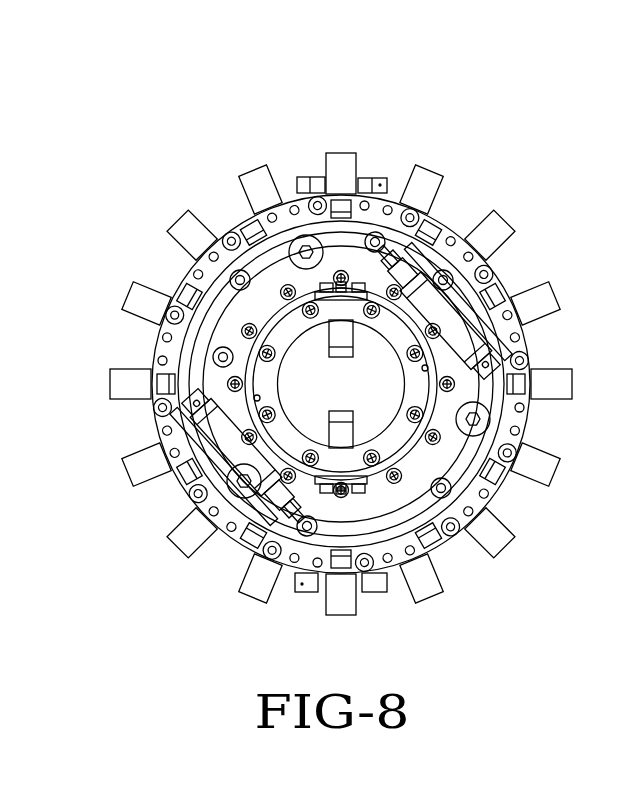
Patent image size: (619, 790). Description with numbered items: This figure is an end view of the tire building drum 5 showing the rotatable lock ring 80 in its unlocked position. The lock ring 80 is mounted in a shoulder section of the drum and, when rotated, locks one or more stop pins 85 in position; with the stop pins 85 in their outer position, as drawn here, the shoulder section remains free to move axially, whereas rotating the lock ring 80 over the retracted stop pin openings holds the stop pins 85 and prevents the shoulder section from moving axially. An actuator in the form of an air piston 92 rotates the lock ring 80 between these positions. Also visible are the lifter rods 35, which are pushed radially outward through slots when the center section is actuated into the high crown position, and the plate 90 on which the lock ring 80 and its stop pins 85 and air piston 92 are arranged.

The clamping tool assembly 5 is at (174, 141).
The lifter rods 35 is at (503, 547).
The rotatable lock ring 80 is at (443, 280).
The stop pin 85 is at (306, 235).
The mounting plate 90 is at (422, 457).
The air piston 92 is at (440, 315).